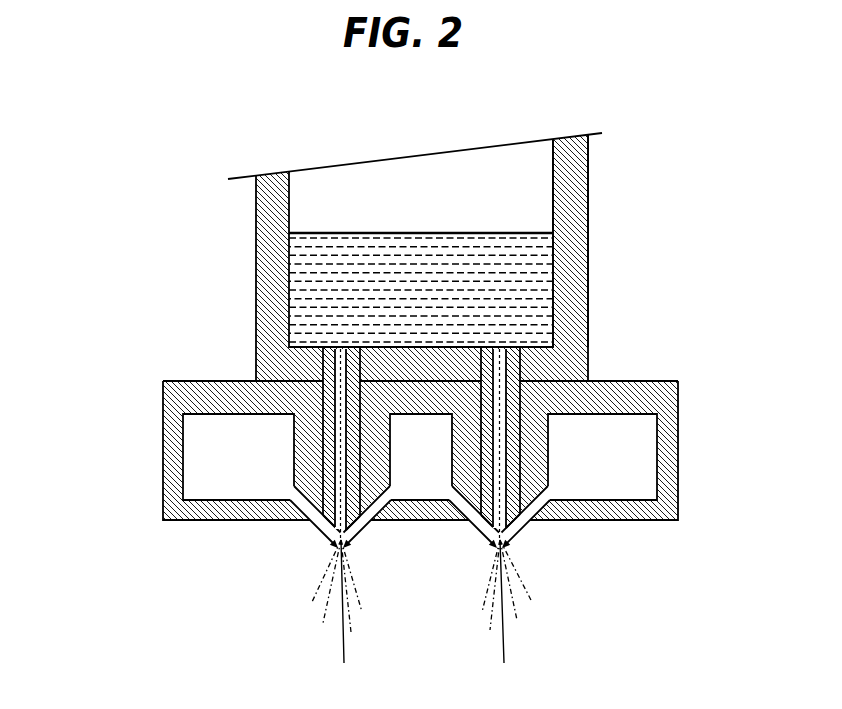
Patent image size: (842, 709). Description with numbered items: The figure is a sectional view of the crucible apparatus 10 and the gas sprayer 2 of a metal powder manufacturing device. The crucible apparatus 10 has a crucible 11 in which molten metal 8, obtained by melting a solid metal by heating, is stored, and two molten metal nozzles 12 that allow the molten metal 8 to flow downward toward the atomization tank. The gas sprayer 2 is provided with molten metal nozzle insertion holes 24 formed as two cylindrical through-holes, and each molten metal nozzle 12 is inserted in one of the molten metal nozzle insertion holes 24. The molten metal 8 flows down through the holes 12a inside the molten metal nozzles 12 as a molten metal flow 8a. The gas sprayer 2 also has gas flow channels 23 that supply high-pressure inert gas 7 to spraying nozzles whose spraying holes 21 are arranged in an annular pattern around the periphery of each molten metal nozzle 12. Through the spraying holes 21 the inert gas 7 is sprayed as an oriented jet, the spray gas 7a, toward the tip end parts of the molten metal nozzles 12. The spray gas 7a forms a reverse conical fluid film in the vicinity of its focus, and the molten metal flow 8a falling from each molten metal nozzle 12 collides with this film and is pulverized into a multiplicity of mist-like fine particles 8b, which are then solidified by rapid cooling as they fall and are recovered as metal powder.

The gas sprayer 2 is at (147, 400).
The inert gas 7 is at (200, 447).
The spray gas 7a is at (320, 582).
The molten metal 8 is at (410, 248).
The molten metal flow 8a is at (428, 619).
The fine particles 8b is at (309, 612).
The crucible apparatus 10 is at (612, 216).
The crucible 11 is at (575, 278).
The molten metal nozzle 12 is at (358, 524).
The hole 12a is at (339, 362).
The spraying hole 21 is at (293, 510).
The gas flow channel 23 is at (193, 475).
The molten metal nozzle insertion hole 24 is at (330, 440).